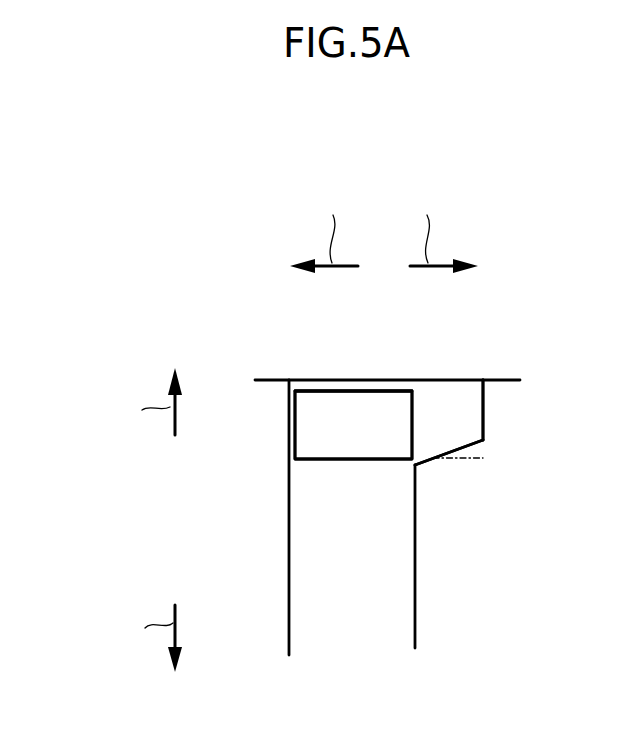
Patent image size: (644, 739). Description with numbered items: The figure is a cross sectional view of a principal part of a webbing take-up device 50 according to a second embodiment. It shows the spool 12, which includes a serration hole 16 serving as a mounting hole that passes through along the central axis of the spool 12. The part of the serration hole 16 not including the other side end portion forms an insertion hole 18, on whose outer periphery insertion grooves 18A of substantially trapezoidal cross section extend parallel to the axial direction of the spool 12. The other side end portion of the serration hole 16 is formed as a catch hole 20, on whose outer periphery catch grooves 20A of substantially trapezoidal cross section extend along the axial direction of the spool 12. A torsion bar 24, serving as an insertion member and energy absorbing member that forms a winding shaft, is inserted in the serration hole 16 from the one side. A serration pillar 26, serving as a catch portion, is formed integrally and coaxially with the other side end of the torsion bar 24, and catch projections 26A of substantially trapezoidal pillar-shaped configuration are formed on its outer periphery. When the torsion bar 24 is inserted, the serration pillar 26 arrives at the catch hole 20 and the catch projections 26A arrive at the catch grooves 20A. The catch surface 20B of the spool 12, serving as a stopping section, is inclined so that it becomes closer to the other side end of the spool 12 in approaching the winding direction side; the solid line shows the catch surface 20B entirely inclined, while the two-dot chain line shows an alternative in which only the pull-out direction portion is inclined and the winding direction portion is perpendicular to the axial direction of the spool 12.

The webbing take-up device 50 is at (192, 208).
The spool 12 is at (260, 376).
The torsion bar 24 is at (311, 385).
The catch projections 26A is at (363, 390).
The serration pillar 26 is at (353, 390).
The catch hole 20 is at (448, 390).
The catch grooves 20A is at (483, 408).
The catch surface 20B is at (478, 454).
The insertion hole 18 is at (317, 542).
The insertion grooves 18A is at (517, 568).
The serration hole 16 is at (393, 613).